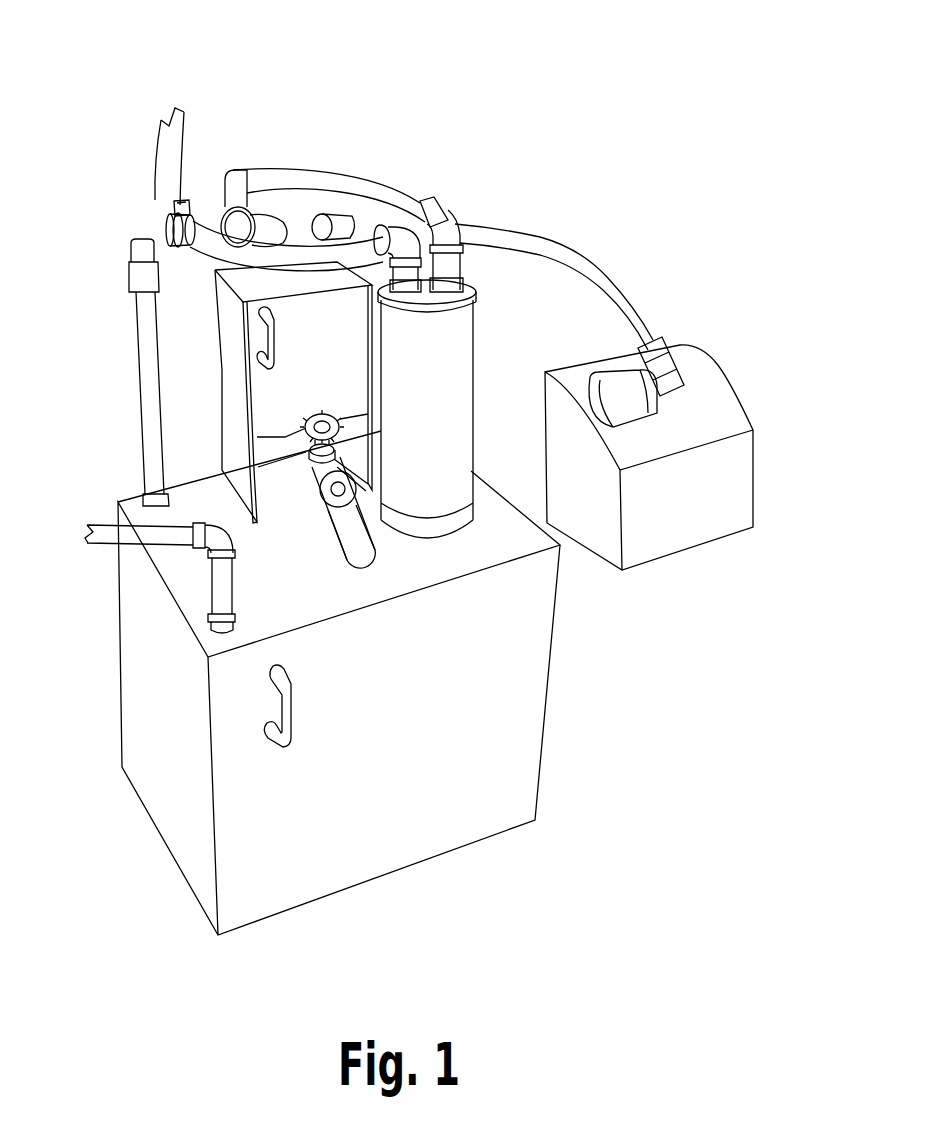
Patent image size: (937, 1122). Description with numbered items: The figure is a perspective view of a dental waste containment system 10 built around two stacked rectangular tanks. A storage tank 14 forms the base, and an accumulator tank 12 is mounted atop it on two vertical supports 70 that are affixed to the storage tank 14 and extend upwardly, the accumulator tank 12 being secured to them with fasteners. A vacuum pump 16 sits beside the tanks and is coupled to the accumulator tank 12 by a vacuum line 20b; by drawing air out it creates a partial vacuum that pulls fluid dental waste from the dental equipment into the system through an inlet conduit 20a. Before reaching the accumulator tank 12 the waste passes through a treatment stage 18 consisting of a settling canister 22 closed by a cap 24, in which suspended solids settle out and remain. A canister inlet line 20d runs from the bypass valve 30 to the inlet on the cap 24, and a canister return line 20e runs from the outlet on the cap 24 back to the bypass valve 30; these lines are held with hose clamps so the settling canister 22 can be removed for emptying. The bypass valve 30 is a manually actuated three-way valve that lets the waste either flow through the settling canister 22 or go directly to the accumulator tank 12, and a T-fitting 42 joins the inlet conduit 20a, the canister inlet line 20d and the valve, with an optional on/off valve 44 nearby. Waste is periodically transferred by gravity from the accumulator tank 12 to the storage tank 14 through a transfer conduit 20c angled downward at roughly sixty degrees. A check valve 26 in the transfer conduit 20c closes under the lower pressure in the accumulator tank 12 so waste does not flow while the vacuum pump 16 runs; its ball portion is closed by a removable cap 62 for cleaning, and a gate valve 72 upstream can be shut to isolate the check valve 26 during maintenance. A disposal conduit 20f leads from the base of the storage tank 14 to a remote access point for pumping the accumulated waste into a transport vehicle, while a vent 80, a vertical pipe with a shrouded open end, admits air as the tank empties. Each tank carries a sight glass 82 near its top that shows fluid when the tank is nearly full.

The dental waste containment system 10 is at (748, 170).
The accumulator tank 12 is at (232, 432).
The storage tank 14 is at (396, 621).
The vacuum pump 16 is at (752, 378).
The treatment stage 18 is at (466, 362).
The inlet conduit 20a is at (175, 158).
The vacuum line 20b is at (555, 253).
The transfer conduit 20c is at (340, 535).
The canister inlet line 20d is at (212, 255).
The canister return line 20e is at (377, 192).
The disposal conduit 20f is at (136, 538).
The settling canister 22 is at (450, 392).
The cap 24 is at (467, 283).
The check valve 26 is at (209, 172).
The bypass valve 30 is at (252, 220).
The T-fitting 42 is at (163, 215).
The on/off valve 44 is at (158, 235).
The removable cap 62 is at (340, 488).
The supports 70 is at (360, 445).
The gate valve 72 is at (255, 456).
The vent 80 is at (145, 327).
The sight glass 82 is at (291, 712).